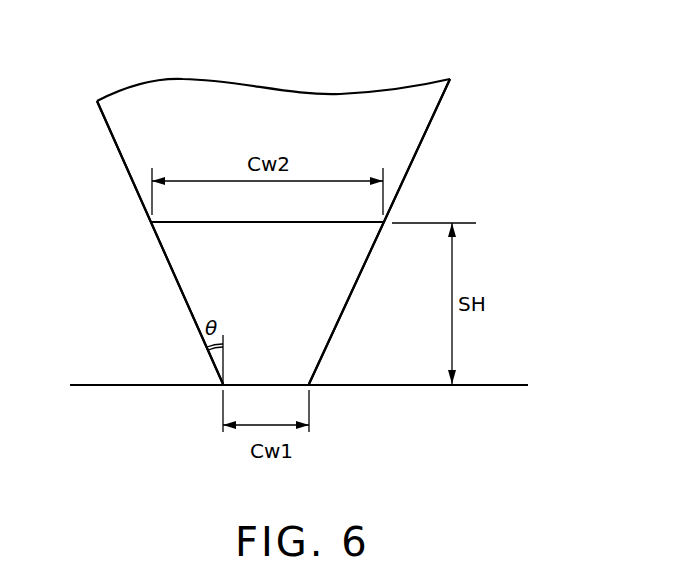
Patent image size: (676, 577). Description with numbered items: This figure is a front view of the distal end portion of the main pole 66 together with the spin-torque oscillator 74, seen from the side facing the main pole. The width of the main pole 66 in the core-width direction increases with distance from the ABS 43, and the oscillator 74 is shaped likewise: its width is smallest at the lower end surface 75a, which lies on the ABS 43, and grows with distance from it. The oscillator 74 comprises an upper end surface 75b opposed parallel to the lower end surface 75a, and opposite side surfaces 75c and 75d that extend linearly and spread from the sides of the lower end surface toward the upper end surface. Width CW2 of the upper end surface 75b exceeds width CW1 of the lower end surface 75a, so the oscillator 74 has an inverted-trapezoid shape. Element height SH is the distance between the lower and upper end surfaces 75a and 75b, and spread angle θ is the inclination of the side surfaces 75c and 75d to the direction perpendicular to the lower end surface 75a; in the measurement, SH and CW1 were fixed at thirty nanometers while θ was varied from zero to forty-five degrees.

The ABS 43 is at (113, 386).
The main pole 66 is at (410, 125).
The spin-torque oscillator 74 is at (178, 250).
The lower end surface 75a is at (282, 387).
The upper end surface 75b is at (323, 222).
The side surface 75c is at (342, 313).
The side surface 75d is at (195, 320).